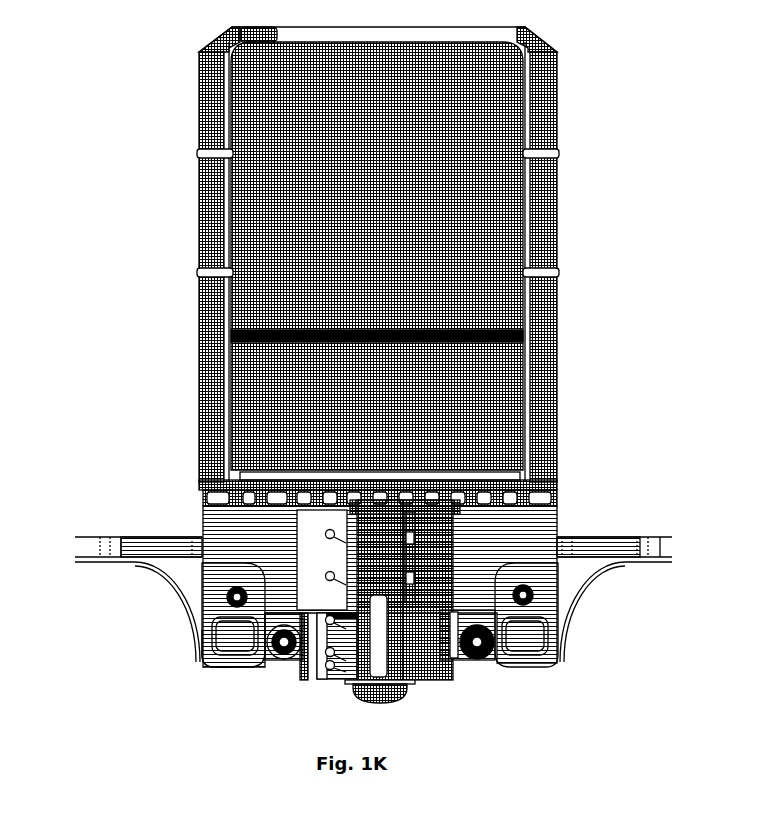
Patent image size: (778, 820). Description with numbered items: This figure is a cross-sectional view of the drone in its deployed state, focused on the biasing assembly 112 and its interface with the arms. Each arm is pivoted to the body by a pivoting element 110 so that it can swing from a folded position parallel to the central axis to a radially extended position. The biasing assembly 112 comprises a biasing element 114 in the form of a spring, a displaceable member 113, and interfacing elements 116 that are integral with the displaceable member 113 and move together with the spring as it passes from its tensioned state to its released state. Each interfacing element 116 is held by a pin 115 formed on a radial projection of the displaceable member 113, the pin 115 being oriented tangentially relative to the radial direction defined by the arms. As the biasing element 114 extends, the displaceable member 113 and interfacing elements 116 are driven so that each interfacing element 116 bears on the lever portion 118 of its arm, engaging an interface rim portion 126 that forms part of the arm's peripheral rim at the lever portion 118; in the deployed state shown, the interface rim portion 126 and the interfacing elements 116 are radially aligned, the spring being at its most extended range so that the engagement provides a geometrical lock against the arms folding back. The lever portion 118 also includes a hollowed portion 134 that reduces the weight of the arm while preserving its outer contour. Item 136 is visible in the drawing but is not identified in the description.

The pivoting element 110 is at (200, 618).
The biasing assembly 112 is at (290, 531).
The displaceable member 113 is at (450, 662).
The biasing element 114 is at (450, 556).
The pin 115 is at (284, 660).
The interfacing element 116 is at (263, 657).
The lever portion 118 is at (150, 604).
The interface rim portion 126 is at (405, 560).
The hollowed portion 134 is at (228, 644).
The bracket edge 136 is at (205, 650).